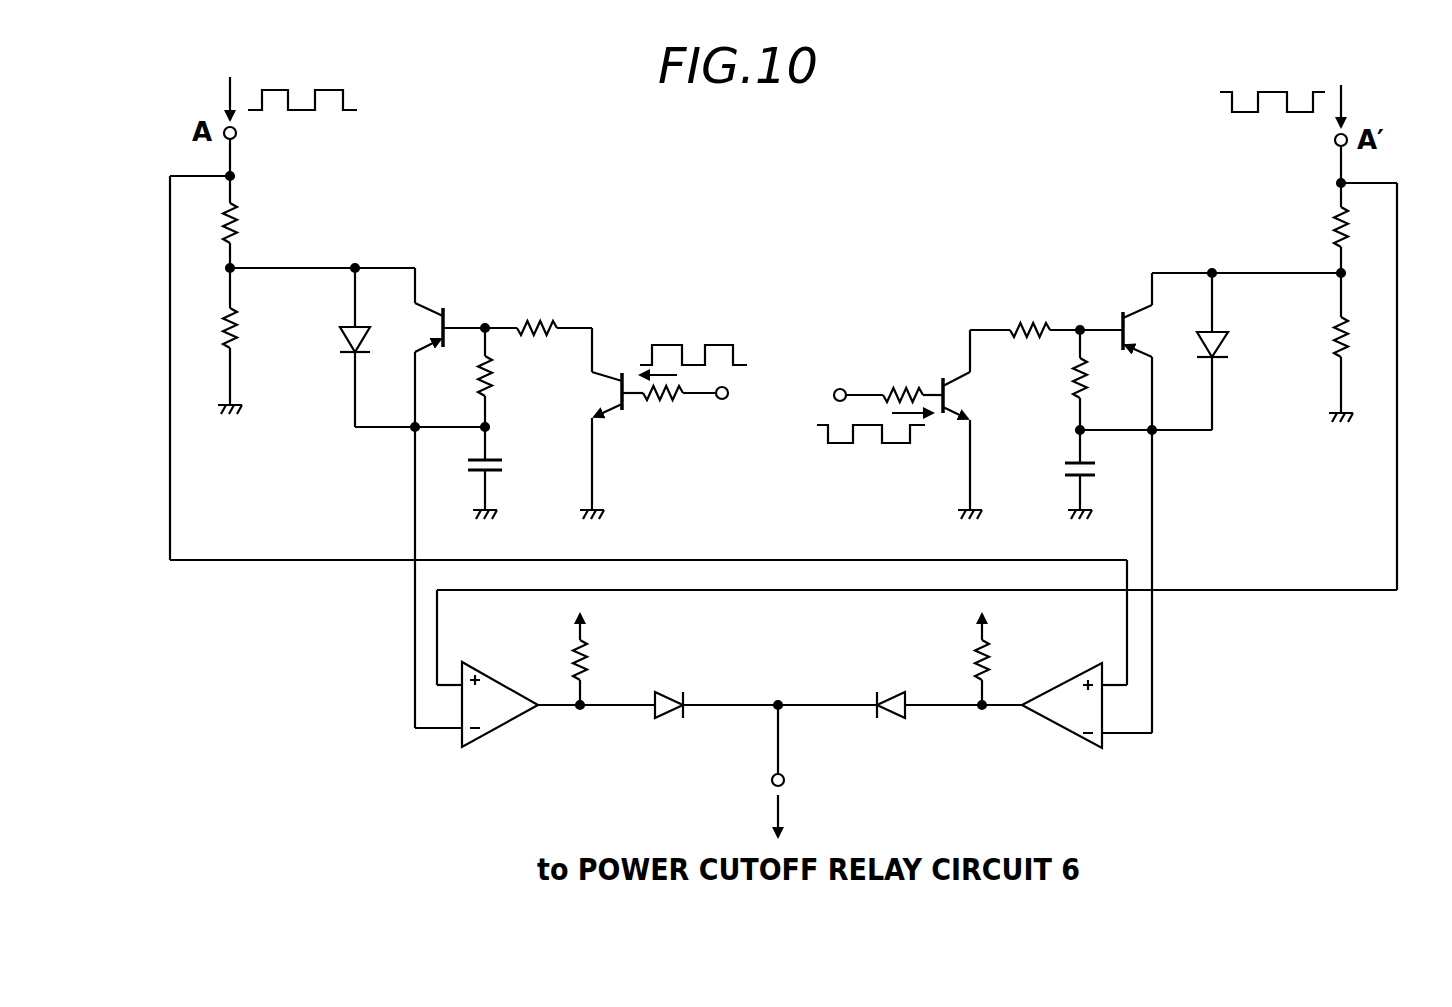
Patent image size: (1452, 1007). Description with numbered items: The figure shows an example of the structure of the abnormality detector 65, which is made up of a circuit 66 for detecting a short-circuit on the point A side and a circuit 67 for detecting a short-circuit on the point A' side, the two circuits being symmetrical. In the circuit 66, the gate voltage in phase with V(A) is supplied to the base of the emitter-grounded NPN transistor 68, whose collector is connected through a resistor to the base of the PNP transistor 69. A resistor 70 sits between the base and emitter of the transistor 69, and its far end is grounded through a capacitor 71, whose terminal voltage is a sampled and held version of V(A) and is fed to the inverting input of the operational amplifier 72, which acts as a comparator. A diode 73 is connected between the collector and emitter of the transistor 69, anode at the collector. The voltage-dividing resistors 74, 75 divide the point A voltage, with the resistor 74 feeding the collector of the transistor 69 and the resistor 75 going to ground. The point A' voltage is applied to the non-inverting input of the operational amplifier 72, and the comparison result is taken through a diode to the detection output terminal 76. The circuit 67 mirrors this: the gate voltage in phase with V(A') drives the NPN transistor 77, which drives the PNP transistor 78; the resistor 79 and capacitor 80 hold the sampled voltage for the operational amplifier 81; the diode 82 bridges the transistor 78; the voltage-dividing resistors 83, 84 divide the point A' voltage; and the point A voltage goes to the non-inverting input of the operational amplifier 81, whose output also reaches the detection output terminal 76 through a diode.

The abnormality detector 65 is at (898, 182).
The circuit 66 is at (594, 300).
The circuit 67 is at (1028, 290).
The NPN transistor 68 is at (628, 405).
The PNP transistor 69 is at (446, 301).
The resistor 70 is at (492, 368).
The capacitor 71 is at (493, 458).
The operational amplifier 72 is at (503, 727).
The diode 73 is at (343, 336).
The voltage-dividing resistor 74 is at (236, 208).
The voltage-dividing resistor 75 is at (236, 312).
The detection output terminal 76 is at (788, 780).
The NPN transistor 77 is at (960, 394).
The PNP transistor 78 is at (1118, 310).
The resistor 79 is at (1078, 388).
The capacitor 80 is at (1070, 480).
The operational amplifier 81 is at (1050, 728).
The diode 82 is at (1216, 358).
The voltage-dividing resistor 83 is at (1334, 219).
The voltage-dividing resistor 84 is at (1334, 330).